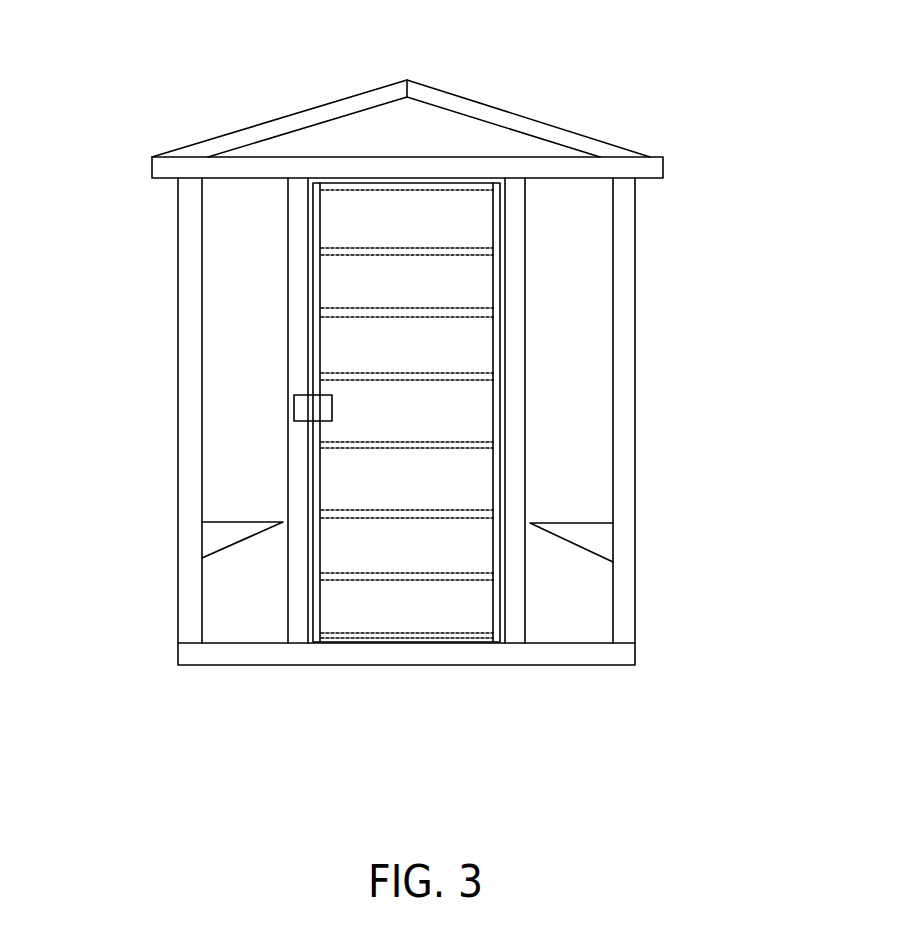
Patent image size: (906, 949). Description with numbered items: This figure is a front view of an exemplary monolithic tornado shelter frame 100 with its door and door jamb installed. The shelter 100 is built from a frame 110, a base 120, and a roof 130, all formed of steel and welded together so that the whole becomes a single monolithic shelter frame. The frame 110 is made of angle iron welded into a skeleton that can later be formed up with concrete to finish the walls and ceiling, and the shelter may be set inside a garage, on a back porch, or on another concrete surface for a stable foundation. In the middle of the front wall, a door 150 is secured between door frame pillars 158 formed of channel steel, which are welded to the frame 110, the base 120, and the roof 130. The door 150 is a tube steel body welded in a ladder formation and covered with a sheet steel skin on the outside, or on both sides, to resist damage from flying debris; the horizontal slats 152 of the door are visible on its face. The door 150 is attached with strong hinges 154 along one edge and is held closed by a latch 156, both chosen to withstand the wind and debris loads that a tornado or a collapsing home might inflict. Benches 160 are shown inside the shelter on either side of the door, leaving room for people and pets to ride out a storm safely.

The monolithic tornado shelter frame 100 is at (411, 382).
The frame 110 is at (183, 625).
The base 120 is at (516, 657).
The roof 130 is at (543, 130).
The door 150 is at (421, 412).
The door slats 152 is at (487, 378).
The hinges 154 is at (502, 214).
The latch 156 is at (302, 405).
The door frame pillars 158 is at (510, 187).
The benches 160 is at (590, 543).